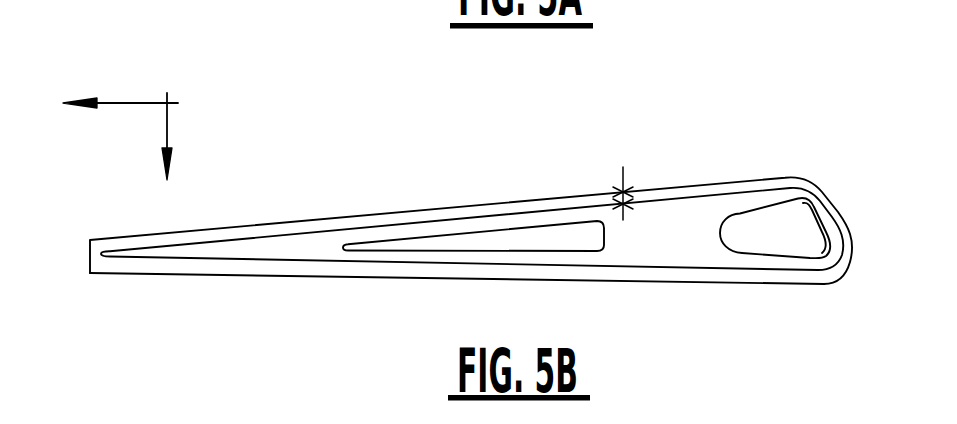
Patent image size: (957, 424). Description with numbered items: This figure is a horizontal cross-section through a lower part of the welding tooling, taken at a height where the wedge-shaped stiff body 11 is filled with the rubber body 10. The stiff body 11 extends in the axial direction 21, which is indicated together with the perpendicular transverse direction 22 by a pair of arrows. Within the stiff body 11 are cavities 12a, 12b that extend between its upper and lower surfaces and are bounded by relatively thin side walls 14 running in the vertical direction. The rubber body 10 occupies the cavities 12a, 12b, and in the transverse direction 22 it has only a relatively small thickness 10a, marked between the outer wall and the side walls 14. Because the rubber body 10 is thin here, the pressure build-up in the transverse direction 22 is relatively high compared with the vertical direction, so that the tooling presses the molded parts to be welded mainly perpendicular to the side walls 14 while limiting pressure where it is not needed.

The rubber body 10 is at (471, 288).
The small thickness 10a is at (622, 178).
The stiff body 11 is at (682, 248).
The cavity 12a is at (472, 242).
The cavity 12b is at (767, 243).
The side walls 14 is at (548, 218).
The axial direction 21 is at (128, 103).
The transverse direction 22 is at (167, 122).